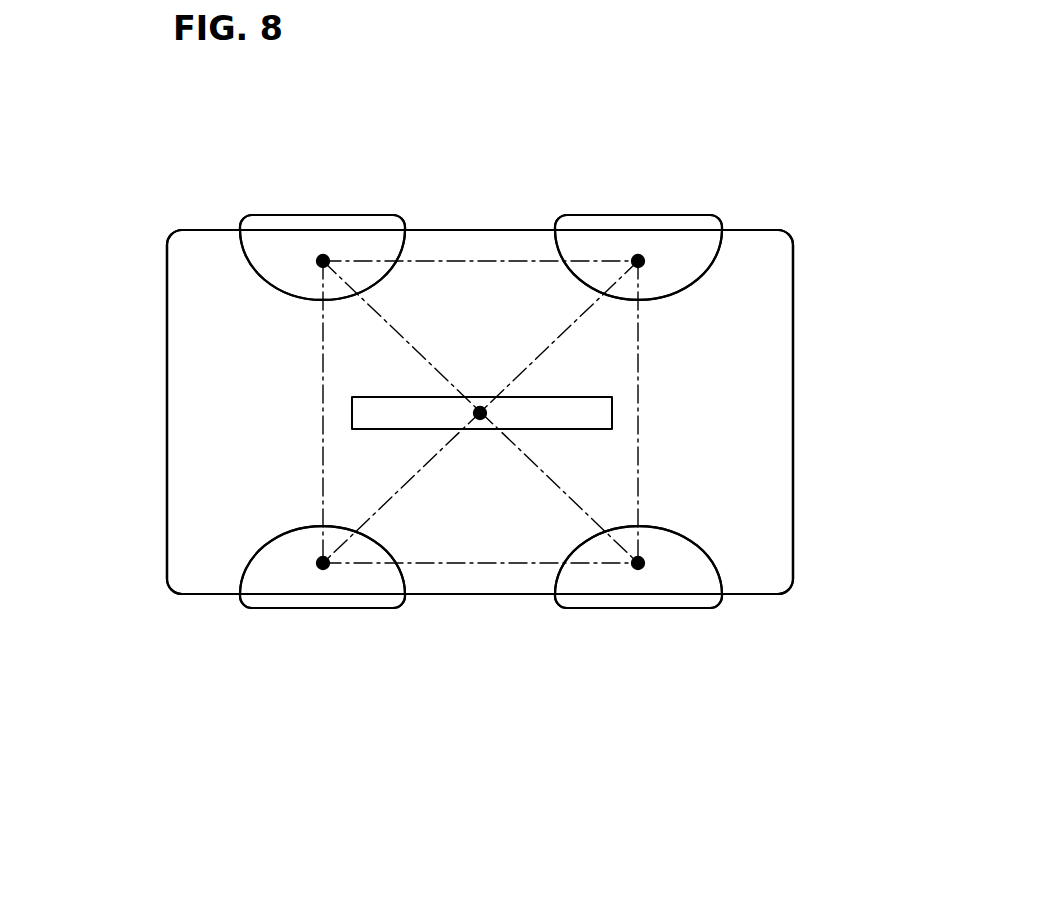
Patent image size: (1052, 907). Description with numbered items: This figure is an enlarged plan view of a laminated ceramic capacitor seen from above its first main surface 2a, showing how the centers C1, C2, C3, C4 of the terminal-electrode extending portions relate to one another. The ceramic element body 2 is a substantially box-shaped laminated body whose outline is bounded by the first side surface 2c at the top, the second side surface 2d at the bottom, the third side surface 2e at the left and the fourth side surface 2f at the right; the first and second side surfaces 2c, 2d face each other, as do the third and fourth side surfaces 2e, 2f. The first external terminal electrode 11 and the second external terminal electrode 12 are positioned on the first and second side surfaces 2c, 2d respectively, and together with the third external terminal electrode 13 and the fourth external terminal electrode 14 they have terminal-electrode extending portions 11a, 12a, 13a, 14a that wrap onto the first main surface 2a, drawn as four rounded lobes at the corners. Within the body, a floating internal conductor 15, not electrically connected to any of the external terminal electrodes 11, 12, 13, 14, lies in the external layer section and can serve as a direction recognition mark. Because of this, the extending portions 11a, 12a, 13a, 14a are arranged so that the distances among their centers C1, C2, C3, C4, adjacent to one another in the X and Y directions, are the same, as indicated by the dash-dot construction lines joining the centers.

The ceramic element body 2 is at (793, 232).
The first main surface 2a is at (182, 437).
The first side surface 2c is at (435, 228).
The second side surface 2d is at (458, 594).
The third side surface 2e is at (167, 368).
The fourth side surface 2f is at (793, 512).
The first external terminal electrode 11 is at (343, 217).
The terminal-electrode extending portion 11a is at (262, 232).
The second external terminal electrode 12 is at (377, 608).
The terminal-electrode extending portion 12a is at (335, 595).
The third external terminal electrode 13 is at (644, 217).
The terminal-electrode extending portion 13a is at (672, 240).
The fourth external terminal electrode 14 is at (648, 608).
The terminal-electrode extending portion 14a is at (670, 595).
The floating internal conductor 15 is at (612, 410).
The center of terminal-electrode extending portion C1 is at (323, 563).
The center of terminal-electrode extending portion C2 is at (638, 563).
The center of terminal-electrode extending portion C3 is at (638, 261).
The center of terminal-electrode extending portion C4 is at (323, 261).